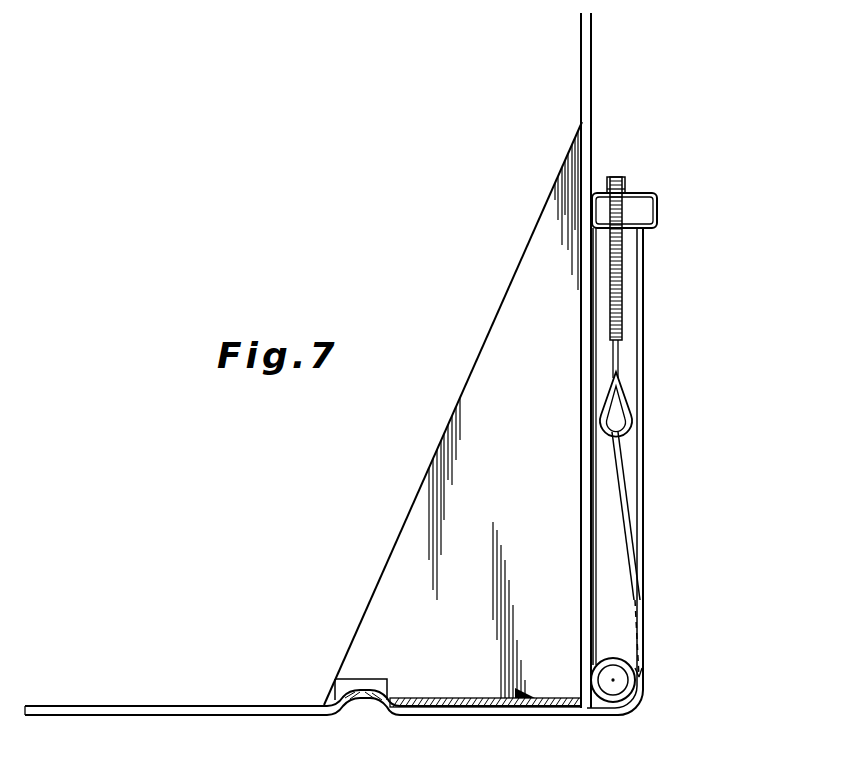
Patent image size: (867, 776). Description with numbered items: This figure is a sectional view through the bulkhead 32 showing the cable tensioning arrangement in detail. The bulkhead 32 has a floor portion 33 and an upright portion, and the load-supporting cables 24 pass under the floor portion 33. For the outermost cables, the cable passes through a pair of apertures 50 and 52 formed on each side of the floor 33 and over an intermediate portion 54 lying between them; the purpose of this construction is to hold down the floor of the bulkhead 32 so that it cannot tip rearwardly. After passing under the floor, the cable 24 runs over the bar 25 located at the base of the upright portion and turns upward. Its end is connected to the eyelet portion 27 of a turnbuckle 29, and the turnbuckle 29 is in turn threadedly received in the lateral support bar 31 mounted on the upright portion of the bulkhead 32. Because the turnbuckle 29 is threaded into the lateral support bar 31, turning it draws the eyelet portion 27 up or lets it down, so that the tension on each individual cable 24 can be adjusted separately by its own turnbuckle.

The load-supporting cable 24 is at (630, 508).
The bar 25 is at (613, 680).
The eyelet portion 27 is at (632, 413).
The turnbuckle 29 is at (610, 308).
The lateral support bar 31 is at (657, 200).
The bulkhead 32 is at (612, 128).
The floor portion 33 is at (458, 698).
The aperture 50 is at (388, 699).
The aperture 52 is at (336, 691).
The intermediate portion 54 is at (360, 690).